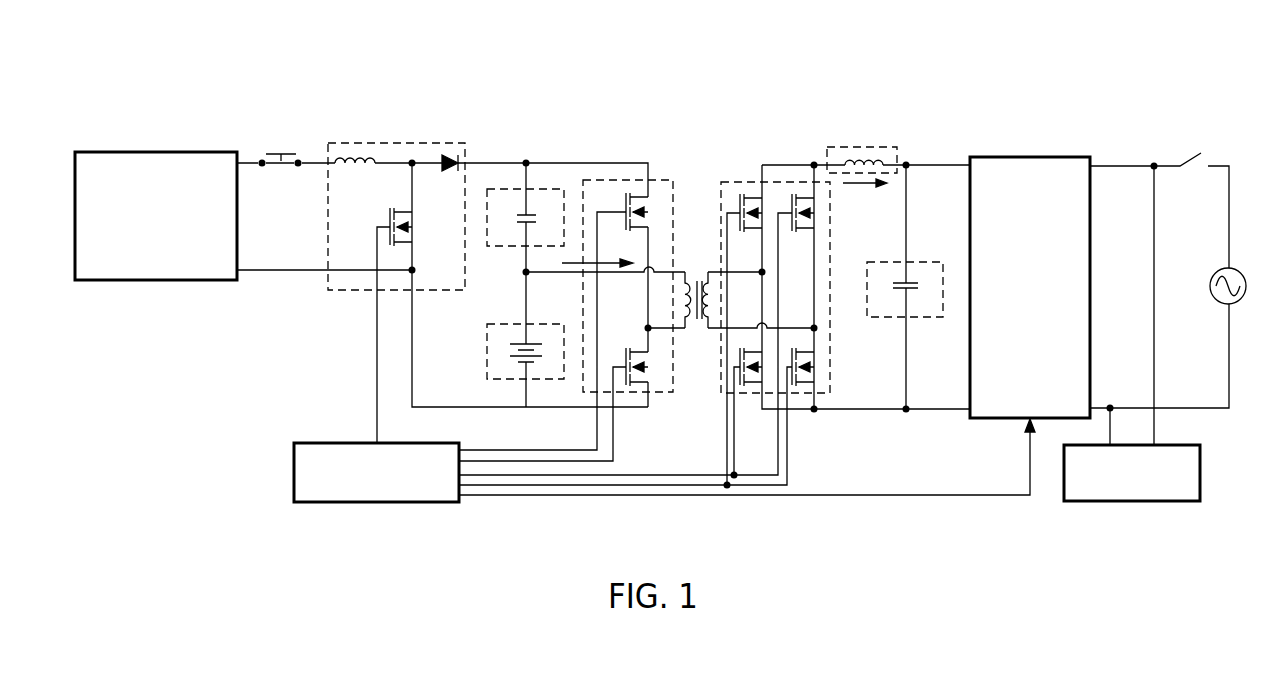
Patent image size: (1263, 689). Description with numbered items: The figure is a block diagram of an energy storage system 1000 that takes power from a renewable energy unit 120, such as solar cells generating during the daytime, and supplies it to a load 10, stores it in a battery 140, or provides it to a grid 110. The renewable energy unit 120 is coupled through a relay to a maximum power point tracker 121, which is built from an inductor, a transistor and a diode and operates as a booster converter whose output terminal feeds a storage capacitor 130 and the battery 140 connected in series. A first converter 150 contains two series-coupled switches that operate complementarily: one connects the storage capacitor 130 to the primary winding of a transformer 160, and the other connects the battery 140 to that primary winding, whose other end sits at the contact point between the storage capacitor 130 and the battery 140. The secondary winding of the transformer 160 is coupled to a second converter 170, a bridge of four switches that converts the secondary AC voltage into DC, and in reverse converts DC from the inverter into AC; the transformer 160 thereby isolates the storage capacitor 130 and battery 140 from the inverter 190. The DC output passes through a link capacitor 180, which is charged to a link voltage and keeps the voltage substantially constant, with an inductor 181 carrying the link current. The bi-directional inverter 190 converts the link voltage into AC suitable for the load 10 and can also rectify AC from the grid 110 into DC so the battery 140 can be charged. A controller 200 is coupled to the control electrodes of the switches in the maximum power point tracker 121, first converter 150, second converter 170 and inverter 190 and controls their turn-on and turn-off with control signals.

The energy storage system 1000 is at (145, 65).
The load 10 is at (1130, 503).
The grid 110 is at (1215, 276).
The renewable energy unit 120 is at (167, 150).
The maximum power point tracker 121 is at (344, 143).
The storage capacitor 130 is at (493, 247).
The battery 140 is at (560, 320).
The first converter 150 is at (669, 180).
The transformer 160 is at (698, 272).
The second converter 170 is at (727, 182).
The link capacitor 180 is at (927, 262).
The inductor 181 is at (860, 147).
The inverter 190 is at (1027, 157).
The controller 200 is at (294, 471).